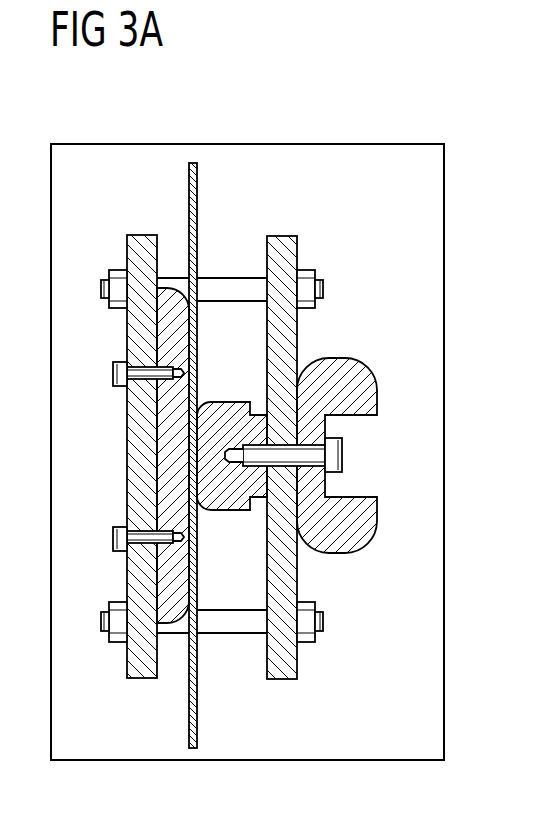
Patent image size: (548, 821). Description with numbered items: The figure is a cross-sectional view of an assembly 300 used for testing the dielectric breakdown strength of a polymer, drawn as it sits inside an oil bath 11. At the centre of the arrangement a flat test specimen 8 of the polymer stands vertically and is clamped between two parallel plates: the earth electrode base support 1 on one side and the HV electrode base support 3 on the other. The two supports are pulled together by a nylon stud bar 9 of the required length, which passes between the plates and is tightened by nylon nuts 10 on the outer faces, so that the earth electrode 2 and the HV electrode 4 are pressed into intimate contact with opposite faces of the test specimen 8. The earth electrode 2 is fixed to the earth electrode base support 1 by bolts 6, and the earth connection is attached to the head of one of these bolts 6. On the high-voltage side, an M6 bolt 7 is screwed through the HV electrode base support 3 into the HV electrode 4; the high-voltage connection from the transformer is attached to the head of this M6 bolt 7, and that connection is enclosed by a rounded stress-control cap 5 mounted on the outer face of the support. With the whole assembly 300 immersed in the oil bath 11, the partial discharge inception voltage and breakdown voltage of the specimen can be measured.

The assembly 300 is at (394, 97).
The oil bath 11 is at (254, 156).
The earth electrode base support 1 is at (141, 256).
The earth electrode 2 is at (168, 345).
The HV electrode base support 3 is at (285, 258).
The HV electrode 4 is at (224, 512).
The stress-control cap 5 is at (345, 372).
The bolts 6 is at (112, 375).
The M6 bolt 7 is at (332, 457).
The test specimen 8 is at (197, 718).
The nylon stud bar 9 is at (224, 623).
The nylon nuts 10 is at (120, 638).